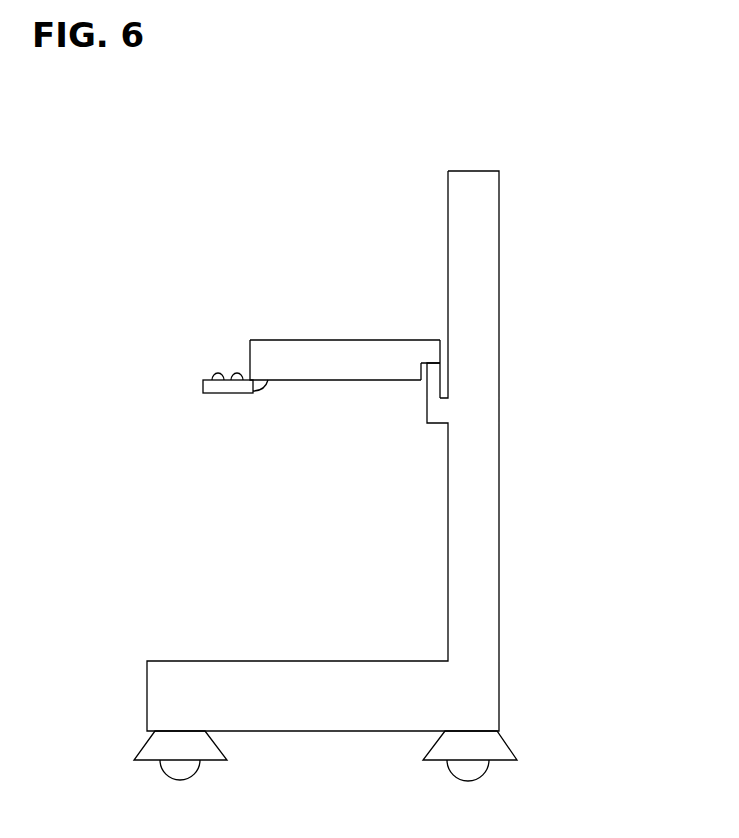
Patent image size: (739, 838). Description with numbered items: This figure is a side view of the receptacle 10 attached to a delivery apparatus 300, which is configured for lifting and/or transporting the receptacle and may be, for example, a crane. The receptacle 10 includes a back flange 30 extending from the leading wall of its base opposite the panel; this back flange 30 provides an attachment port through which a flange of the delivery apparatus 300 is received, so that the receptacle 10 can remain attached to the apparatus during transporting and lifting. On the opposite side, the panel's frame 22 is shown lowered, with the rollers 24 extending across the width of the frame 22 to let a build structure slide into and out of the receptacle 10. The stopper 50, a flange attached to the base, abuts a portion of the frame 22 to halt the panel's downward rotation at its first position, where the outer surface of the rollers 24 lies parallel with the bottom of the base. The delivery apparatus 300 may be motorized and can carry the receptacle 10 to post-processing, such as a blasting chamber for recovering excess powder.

The receptacle 10 is at (258, 316).
The frame 22 is at (207, 388).
The rollers 24 is at (216, 375).
The back flange 30 is at (433, 353).
The stopper 50 is at (256, 390).
The delivery apparatus 300 is at (540, 427).